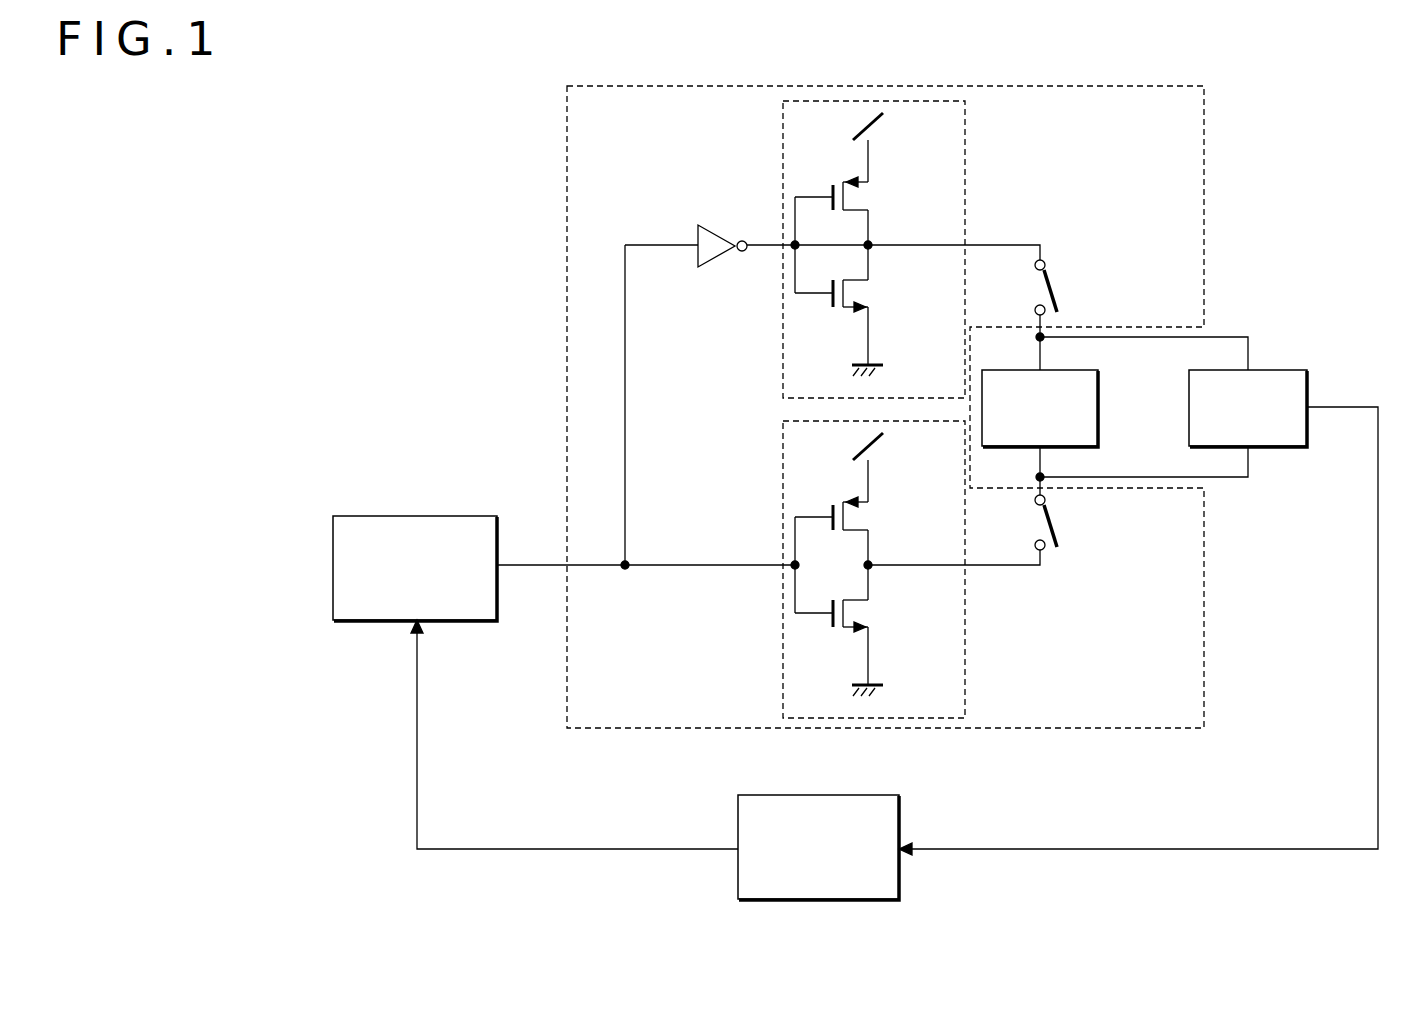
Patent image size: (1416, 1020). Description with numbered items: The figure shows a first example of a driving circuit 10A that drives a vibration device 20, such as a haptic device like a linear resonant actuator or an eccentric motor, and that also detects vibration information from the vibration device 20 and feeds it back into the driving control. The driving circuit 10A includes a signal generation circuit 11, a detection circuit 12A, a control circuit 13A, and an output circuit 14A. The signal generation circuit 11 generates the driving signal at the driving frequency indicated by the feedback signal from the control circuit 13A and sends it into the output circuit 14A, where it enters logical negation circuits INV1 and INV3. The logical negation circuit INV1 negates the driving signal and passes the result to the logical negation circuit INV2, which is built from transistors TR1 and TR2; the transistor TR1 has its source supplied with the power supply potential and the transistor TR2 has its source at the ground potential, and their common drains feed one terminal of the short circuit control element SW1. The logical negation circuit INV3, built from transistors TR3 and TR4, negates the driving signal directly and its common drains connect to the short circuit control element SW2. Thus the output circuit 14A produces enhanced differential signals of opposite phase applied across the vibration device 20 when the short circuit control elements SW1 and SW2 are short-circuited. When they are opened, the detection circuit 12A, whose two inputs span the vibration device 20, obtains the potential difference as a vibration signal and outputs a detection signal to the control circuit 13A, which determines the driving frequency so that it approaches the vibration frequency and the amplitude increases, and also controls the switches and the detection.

The driving circuit 10A is at (1300, 199).
The signal generation circuit 11 is at (408, 515).
The detection circuit 12A is at (1276, 370).
The control circuit 13A is at (842, 795).
The output circuit 14A is at (964, 86).
The vibration device 20 is at (1010, 370).
The logical negation circuit INV1 is at (720, 228).
The logical negation circuit INV2 is at (783, 318).
The logical negation circuit INV3 is at (783, 505).
The transistor TR1 is at (861, 200).
The transistor TR2 is at (862, 297).
The transistor TR3 is at (861, 520).
The transistor TR4 is at (862, 617).
The short circuit control element SW1 is at (1069, 274).
The short circuit control element SW2 is at (1065, 517).